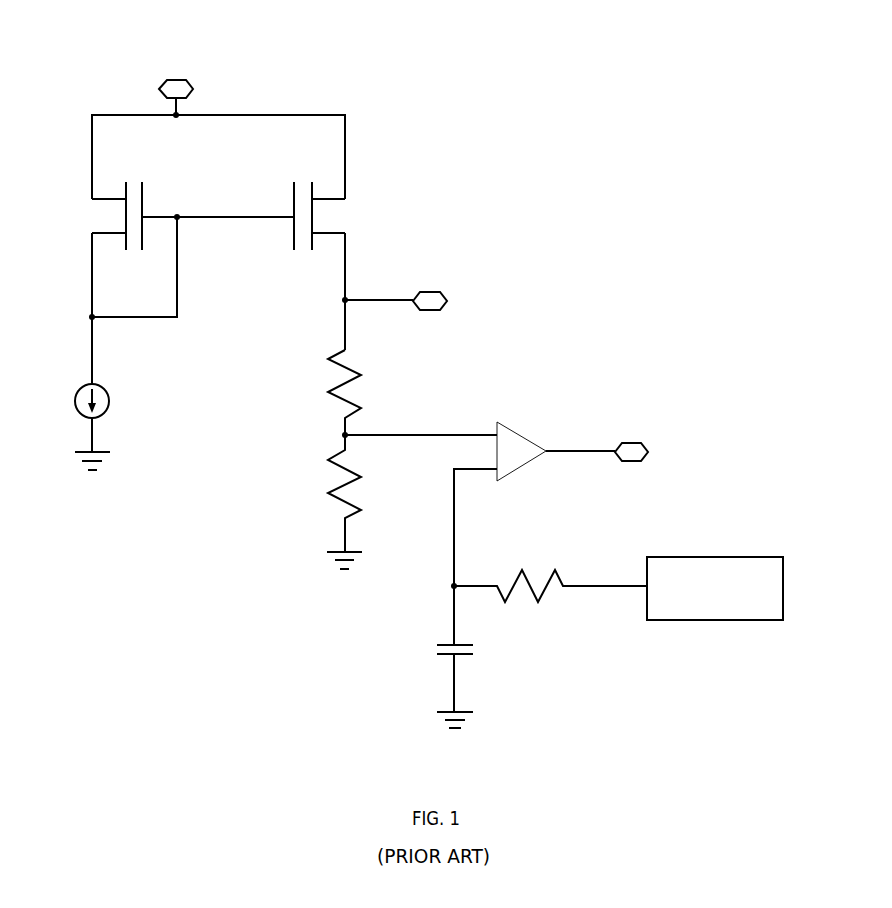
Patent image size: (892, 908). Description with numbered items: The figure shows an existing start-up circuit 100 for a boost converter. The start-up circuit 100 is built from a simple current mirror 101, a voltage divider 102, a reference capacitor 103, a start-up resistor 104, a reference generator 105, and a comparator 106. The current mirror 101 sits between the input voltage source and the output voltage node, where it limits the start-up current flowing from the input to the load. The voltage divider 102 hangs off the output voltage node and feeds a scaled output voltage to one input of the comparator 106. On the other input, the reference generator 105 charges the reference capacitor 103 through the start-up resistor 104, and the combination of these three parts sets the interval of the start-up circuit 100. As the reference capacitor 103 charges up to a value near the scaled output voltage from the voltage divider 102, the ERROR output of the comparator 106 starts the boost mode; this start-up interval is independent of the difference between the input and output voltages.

The start-up circuit 100 is at (566, 134).
The current mirror 101 is at (402, 198).
The voltage divider 102 is at (286, 431).
The reference capacitor 103 is at (400, 654).
The start-up resistor 104 is at (522, 568).
The reference generator 105 is at (707, 557).
The comparator 106 is at (512, 425).